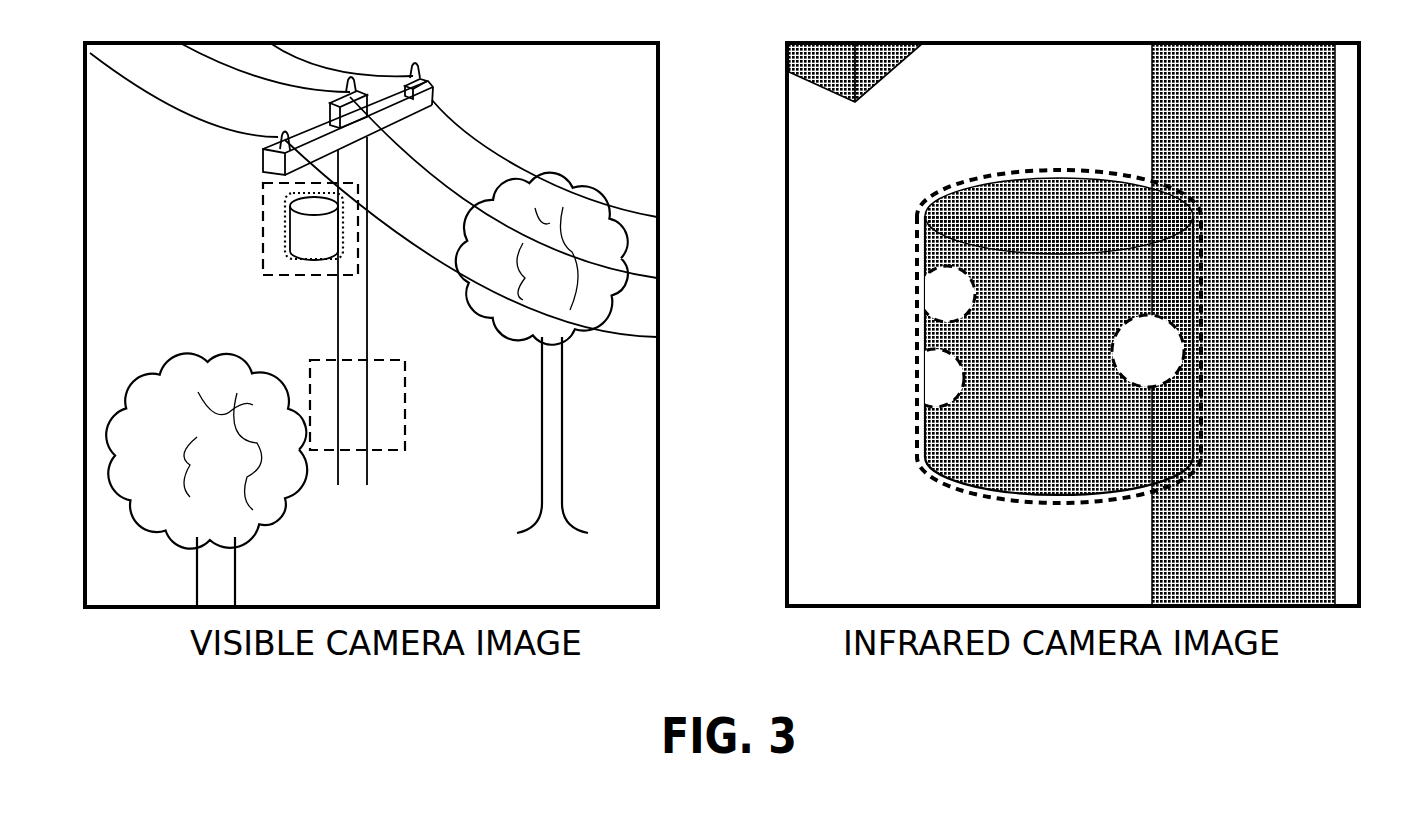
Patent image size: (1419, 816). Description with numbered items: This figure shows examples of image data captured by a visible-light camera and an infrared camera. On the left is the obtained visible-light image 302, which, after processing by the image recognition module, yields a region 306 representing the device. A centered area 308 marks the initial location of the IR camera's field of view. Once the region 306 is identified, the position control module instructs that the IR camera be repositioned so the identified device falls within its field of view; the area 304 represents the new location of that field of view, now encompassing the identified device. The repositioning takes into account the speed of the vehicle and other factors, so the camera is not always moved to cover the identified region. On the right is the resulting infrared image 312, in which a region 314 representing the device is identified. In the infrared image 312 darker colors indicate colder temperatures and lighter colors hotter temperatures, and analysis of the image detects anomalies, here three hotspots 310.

The visible-light image 302 is at (152, 591).
The area representing new location of the IR camera's field of view 304 is at (288, 215).
The region representing the device 306 is at (313, 260).
The centered area 308 is at (405, 405).
The hotspots 310 is at (973, 292).
The infrared image 312 is at (857, 592).
The region representing the device 314 is at (917, 436).